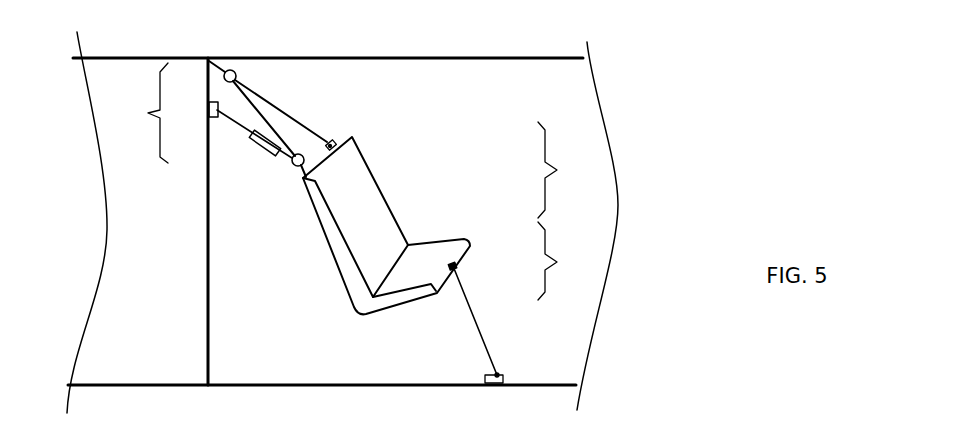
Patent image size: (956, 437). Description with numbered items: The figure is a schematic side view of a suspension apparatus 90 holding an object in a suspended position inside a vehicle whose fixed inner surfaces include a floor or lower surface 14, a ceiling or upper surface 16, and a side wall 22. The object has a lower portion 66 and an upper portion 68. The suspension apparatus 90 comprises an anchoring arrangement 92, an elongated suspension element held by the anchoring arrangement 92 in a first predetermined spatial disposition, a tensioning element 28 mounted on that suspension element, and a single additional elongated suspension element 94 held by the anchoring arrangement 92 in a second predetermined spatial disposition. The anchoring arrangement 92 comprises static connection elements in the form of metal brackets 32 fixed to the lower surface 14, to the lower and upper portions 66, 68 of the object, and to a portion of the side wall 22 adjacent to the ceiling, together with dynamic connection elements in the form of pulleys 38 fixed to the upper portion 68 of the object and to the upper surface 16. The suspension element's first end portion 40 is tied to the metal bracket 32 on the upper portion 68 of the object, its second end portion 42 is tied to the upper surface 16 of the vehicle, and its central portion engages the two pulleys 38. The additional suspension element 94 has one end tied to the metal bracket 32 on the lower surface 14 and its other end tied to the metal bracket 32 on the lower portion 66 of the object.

The floor or lower surface 14 is at (448, 385).
The ceiling or upper surface 16 is at (144, 113).
The side wall 22 is at (210, 348).
The tensioning element 28 is at (265, 152).
The metal brackets 32 is at (217, 118).
The pulleys 38 is at (236, 70).
The first end portion 40 is at (329, 140).
The second end portion 42 is at (218, 108).
The lower portion 66 is at (565, 261).
The upper portion 68 is at (565, 170).
The suspension apparatus 90 is at (413, 93).
The anchoring arrangement 92 is at (262, 180).
The additional elongated suspension element 94 is at (123, 57).